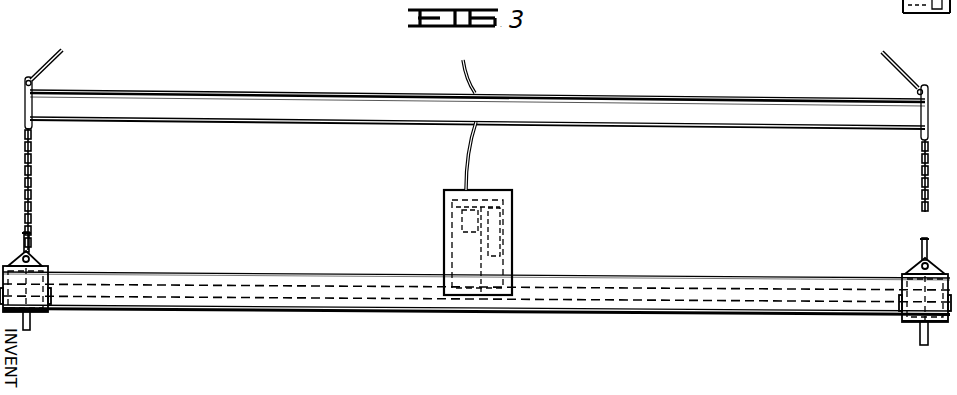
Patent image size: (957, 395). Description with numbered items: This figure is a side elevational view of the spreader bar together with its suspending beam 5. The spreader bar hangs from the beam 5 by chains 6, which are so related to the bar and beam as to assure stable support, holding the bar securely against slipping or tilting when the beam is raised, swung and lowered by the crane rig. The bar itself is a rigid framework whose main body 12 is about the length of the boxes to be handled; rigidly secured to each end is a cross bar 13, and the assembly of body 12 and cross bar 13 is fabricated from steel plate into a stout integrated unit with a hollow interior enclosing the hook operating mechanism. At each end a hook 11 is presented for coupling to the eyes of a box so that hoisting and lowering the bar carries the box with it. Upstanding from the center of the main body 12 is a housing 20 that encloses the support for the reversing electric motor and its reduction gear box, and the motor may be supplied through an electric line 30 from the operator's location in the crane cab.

The beam 5 is at (285, 92).
The chains 6 is at (31, 194).
The hook 11 is at (28, 330).
The main body 12 is at (266, 275).
The cross bar 13 is at (48, 311).
The housing 20 is at (512, 212).
The electric line 30 is at (476, 72).